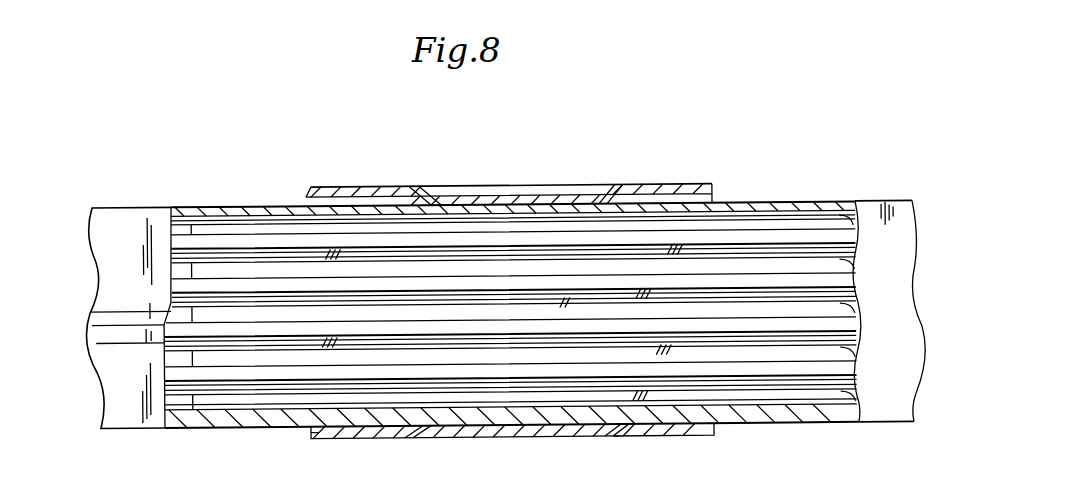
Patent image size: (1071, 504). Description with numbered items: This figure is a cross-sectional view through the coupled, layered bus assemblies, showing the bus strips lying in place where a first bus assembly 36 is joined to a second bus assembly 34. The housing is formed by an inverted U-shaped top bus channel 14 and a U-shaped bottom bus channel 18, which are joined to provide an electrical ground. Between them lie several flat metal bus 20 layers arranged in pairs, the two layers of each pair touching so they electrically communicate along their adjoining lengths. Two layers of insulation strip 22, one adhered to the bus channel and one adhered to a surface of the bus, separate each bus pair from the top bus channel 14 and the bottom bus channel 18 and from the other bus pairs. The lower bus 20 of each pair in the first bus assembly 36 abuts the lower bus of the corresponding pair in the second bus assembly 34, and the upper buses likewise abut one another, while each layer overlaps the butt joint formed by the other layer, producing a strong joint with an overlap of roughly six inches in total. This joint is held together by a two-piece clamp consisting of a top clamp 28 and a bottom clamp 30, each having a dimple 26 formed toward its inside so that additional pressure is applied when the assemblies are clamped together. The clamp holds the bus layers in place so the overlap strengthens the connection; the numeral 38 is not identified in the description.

The top bus channel 14 is at (288, 204).
The bottom bus channel 18 is at (240, 418).
The metal bus 20 is at (847, 208).
The insulation strip 22 is at (737, 213).
The dimple 26 is at (558, 186).
The top clamp 28 is at (652, 186).
The bottom clamp 30 is at (657, 437).
The second bus assembly 34 is at (781, 204).
The first bus assembly 36 is at (230, 204).
The plate assembly 38 is at (519, 186).